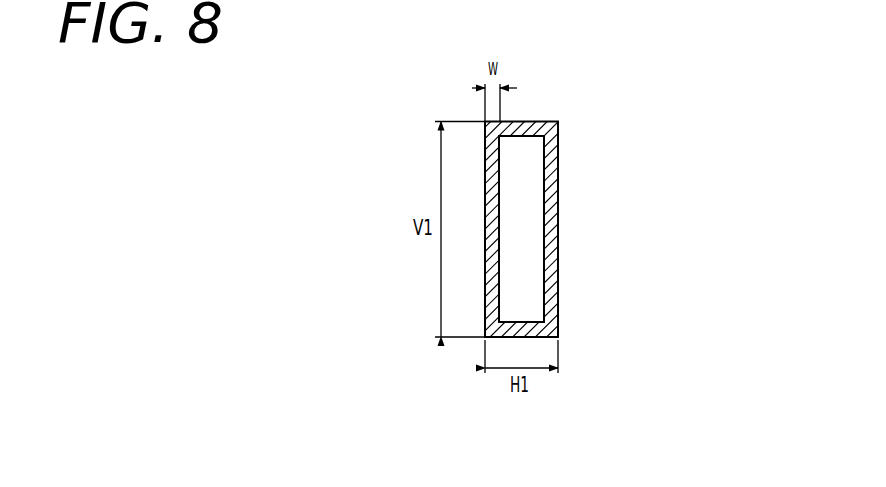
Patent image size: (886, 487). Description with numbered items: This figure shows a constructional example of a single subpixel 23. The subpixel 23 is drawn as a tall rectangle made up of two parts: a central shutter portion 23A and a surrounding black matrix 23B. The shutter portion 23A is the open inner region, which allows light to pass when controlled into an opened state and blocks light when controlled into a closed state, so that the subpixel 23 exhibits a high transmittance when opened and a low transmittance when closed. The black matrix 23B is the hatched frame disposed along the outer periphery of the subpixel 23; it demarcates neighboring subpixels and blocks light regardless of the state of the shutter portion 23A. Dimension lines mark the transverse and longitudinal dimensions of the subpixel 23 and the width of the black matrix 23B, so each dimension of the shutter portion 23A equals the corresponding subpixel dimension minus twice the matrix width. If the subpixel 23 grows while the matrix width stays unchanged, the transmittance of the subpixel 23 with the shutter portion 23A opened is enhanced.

The subpixel 23 is at (558, 131).
The black matrix 23B is at (558, 190).
The shutter portion 23A is at (544, 237).